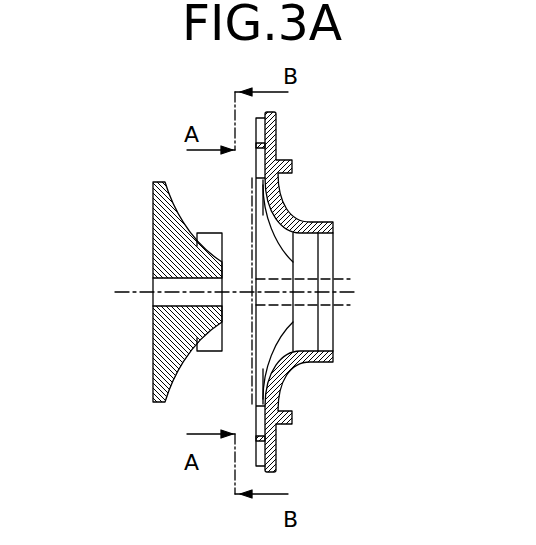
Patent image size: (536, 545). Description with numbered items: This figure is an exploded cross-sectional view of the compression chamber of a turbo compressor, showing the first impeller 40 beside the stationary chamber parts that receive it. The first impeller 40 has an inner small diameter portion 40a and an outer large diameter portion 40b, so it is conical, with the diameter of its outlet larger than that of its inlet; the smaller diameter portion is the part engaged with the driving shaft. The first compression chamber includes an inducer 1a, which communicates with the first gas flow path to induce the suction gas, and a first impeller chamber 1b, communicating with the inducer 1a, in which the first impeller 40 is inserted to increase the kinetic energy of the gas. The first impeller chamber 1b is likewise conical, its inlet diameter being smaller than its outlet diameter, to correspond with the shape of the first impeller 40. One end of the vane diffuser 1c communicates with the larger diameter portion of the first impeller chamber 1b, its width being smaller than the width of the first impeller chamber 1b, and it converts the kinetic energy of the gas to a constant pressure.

The inducer 1a is at (333, 277).
The first impeller chamber 1b is at (318, 222).
The vane diffuser 1c is at (258, 133).
The first impeller 40 is at (147, 313).
The inner small diameter portion 40a is at (211, 318).
The outer large diameter portion 40b is at (170, 249).